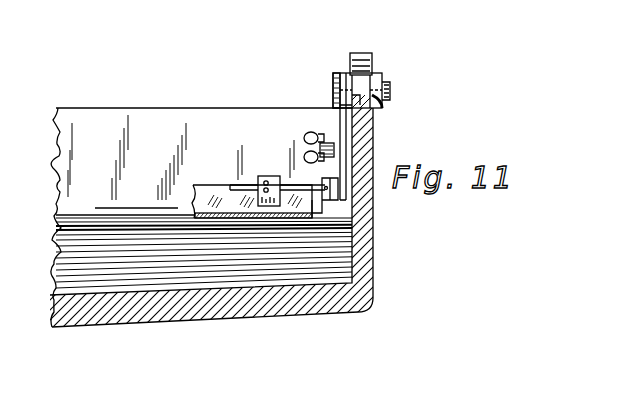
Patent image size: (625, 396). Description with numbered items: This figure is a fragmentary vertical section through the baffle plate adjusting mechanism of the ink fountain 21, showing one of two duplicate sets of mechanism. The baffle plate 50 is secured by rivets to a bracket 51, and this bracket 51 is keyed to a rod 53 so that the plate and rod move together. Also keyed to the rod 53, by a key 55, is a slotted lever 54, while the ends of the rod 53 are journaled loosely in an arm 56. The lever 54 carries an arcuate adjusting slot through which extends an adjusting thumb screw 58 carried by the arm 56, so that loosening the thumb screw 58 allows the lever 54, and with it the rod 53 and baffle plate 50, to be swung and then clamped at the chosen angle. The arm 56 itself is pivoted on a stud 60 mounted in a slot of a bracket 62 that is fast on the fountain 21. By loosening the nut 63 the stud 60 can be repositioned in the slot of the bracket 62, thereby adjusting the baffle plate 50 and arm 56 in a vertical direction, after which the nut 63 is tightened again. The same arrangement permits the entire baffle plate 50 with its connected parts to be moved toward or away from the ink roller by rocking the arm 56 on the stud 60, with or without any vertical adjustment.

The fountain 21 is at (312, 322).
The baffle plate 50 is at (213, 172).
The bracket 51 is at (268, 172).
The rod 53 is at (238, 180).
The slotted lever 54 is at (324, 198).
The key 55 is at (327, 200).
The arm 56 is at (374, 126).
The adjusting thumb screw 58 is at (313, 131).
The stud 60 is at (333, 88).
The bracket 62 is at (358, 53).
The nut 63 is at (380, 86).